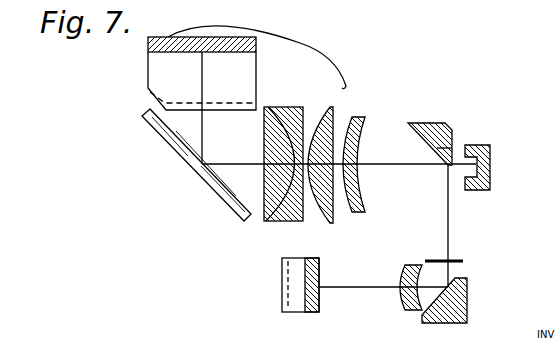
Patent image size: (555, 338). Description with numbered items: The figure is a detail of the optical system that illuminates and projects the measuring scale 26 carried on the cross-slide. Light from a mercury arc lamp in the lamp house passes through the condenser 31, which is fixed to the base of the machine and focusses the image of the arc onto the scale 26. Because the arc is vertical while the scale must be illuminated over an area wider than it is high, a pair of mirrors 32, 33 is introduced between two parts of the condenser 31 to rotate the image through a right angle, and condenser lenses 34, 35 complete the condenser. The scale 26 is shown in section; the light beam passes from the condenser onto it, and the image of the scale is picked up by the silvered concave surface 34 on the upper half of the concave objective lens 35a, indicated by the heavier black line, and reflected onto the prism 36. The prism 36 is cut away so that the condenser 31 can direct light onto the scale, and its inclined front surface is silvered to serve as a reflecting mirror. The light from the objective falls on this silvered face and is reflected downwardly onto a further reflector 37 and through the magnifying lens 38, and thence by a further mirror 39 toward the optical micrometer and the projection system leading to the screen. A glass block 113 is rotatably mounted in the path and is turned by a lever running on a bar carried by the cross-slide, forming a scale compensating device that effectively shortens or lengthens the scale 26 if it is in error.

The measuring scale 26 is at (485, 145).
The condenser 31 is at (257, 57).
The mirror 32 is at (240, 78).
The mirror 33 is at (210, 188).
The condenser lens 34 is at (297, 99).
The condenser lens 35 is at (323, 108).
The concave objective lens 35a is at (360, 188).
The prism 36 is at (432, 123).
The reflector 37 is at (467, 287).
The magnifying lens 38 is at (405, 270).
The mirror 39 is at (318, 268).
The glass block 113 is at (450, 260).